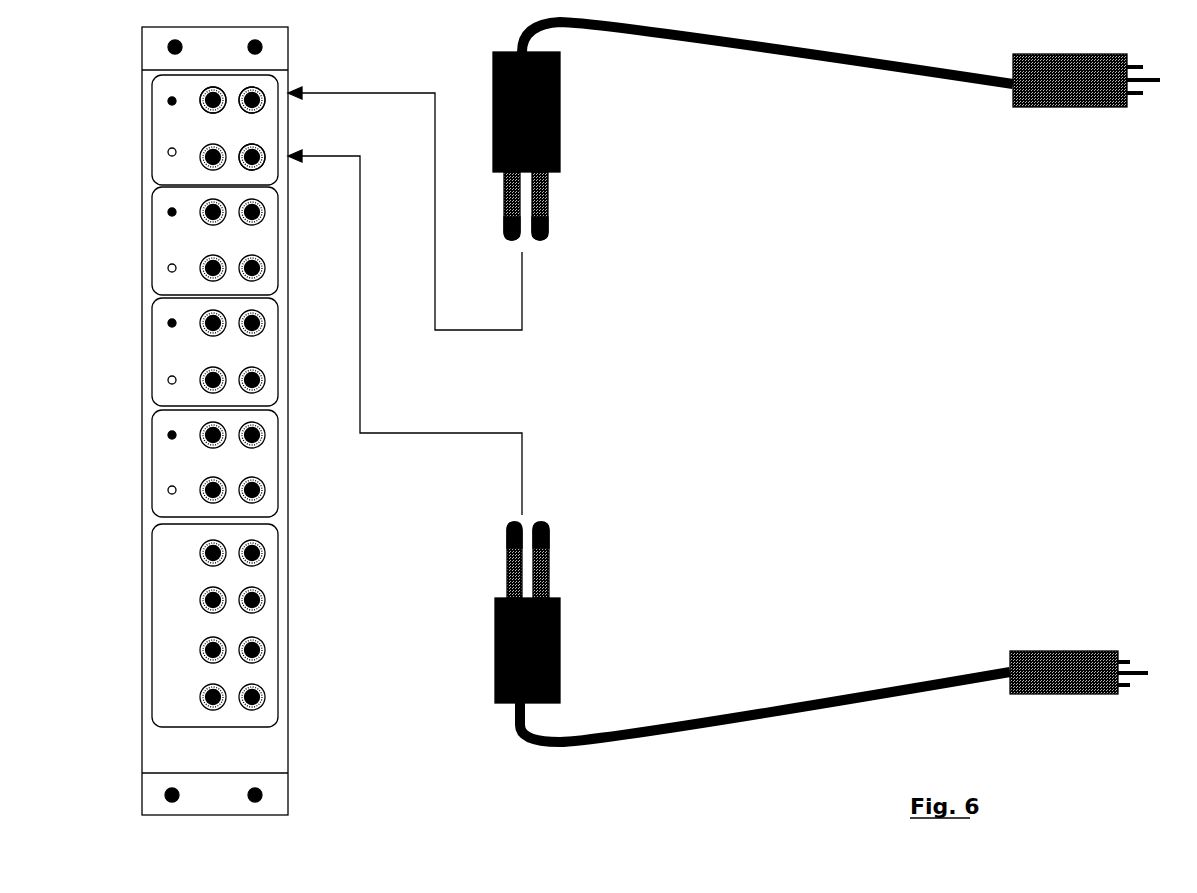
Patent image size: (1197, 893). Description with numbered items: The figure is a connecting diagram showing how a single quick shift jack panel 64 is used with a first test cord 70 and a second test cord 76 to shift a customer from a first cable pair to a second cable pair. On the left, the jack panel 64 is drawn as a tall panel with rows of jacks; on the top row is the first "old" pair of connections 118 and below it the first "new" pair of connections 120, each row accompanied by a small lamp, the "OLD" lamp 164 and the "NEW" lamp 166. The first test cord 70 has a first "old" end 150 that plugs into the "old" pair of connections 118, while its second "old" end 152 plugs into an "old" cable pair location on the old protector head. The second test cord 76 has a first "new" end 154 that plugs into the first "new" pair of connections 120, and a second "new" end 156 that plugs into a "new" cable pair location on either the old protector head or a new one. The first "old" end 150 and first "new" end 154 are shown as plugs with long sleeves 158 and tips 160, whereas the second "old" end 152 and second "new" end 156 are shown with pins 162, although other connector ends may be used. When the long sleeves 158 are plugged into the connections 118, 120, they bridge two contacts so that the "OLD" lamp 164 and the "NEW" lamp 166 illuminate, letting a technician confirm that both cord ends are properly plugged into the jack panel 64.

The jack panel 64 is at (290, 47).
The first "old" pair of connections 118 is at (263, 120).
The first "new" pair of connections 120 is at (242, 150).
The "OLD" lamp 164 is at (170, 101).
The "NEW" lamp 166 is at (172, 156).
The first "old" end 150 is at (562, 112).
The first "new" end 154 is at (562, 628).
The long sleeves 158 is at (550, 197).
The tips 160 is at (548, 243).
The first test cord 70 is at (797, 50).
The second test cord 76 is at (727, 710).
The second "old" end 152 is at (1070, 108).
The second "new" end 156 is at (1048, 651).
The pins 162 is at (1145, 100).